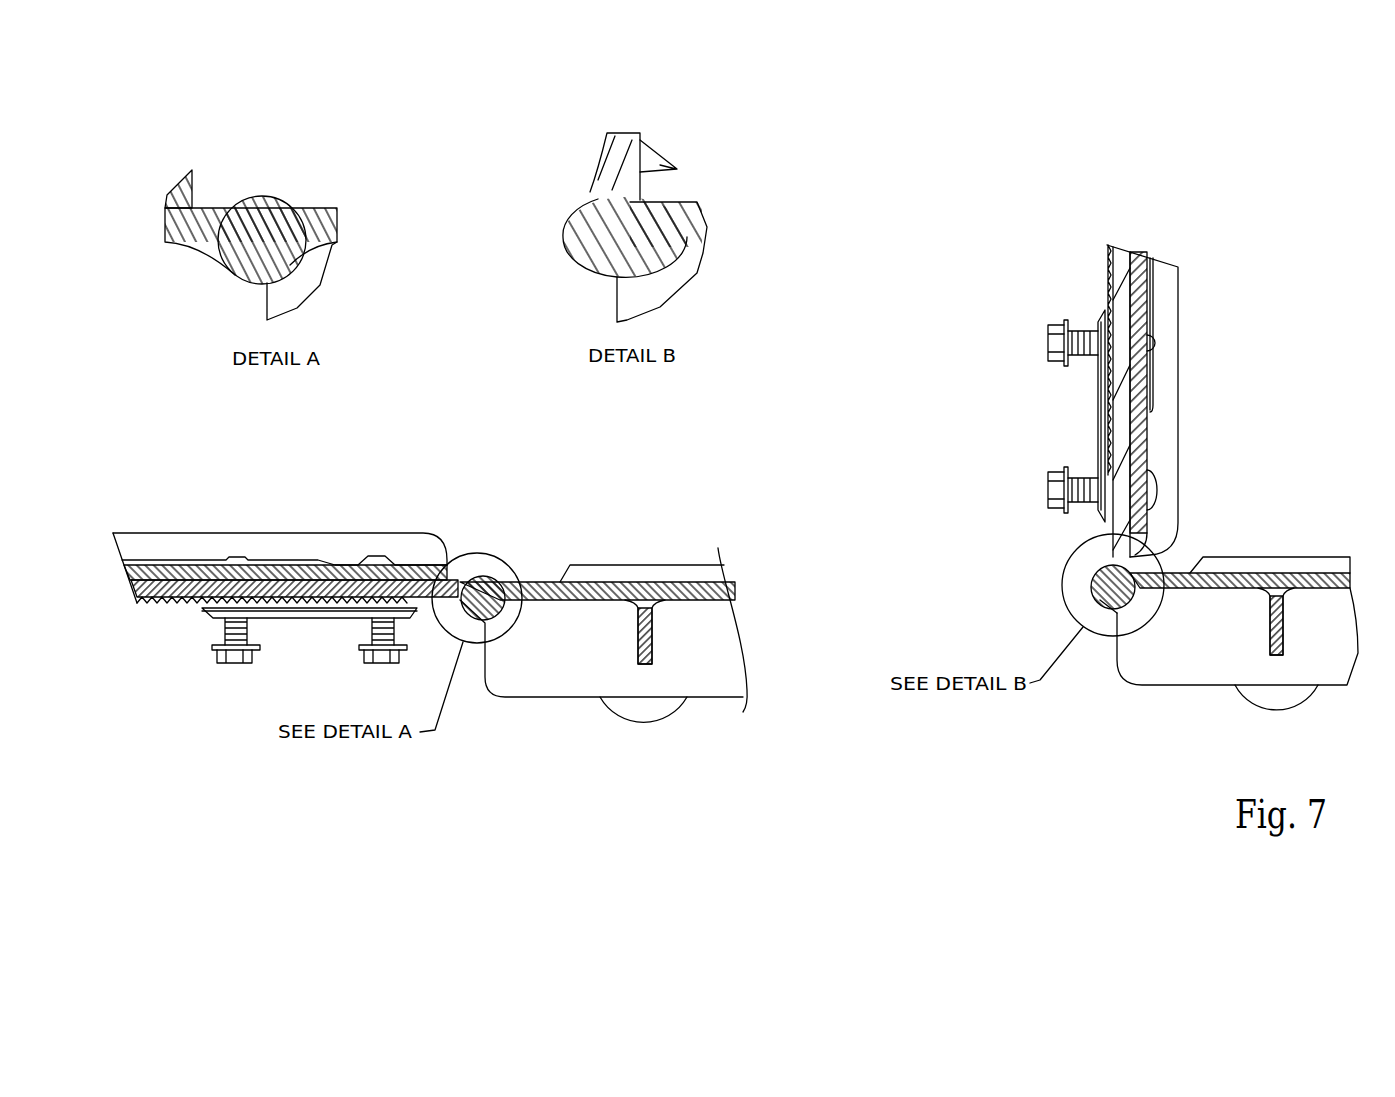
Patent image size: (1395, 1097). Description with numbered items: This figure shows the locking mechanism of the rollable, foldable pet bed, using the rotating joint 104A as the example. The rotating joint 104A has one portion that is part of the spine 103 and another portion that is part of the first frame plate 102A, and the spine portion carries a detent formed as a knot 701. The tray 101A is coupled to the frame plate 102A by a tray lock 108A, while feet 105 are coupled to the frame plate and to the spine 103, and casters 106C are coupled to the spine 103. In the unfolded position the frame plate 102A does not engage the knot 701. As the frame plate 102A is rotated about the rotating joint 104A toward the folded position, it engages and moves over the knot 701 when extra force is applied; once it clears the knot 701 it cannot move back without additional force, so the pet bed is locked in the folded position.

The knot 701 is at (240, 196).
The first frame plate 102A is at (167, 225).
The spine 103 is at (320, 205).
The tray 101A is at (145, 550).
The first set of rotating joints 104A is at (483, 560).
The feet 105 is at (535, 680).
The casters 106C is at (648, 707).
The tray lock 108A is at (195, 610).